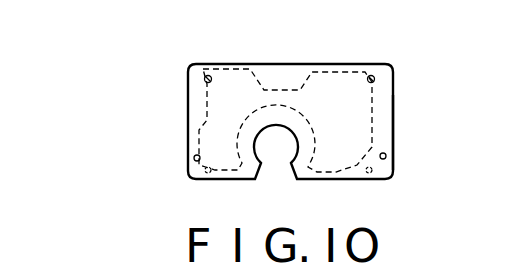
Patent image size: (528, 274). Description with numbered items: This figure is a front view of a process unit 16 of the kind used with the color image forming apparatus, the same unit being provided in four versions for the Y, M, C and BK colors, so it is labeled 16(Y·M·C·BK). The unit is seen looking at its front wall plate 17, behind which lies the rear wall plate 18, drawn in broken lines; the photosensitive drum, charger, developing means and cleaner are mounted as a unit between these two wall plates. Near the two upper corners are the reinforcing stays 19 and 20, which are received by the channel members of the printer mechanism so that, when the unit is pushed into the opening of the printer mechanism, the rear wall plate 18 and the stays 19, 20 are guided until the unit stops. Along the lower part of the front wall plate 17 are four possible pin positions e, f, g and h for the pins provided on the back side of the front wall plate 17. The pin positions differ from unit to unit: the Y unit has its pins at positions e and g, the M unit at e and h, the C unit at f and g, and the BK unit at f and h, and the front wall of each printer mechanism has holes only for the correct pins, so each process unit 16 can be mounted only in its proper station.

The process unit 16 is at (271, 63).
The front wall plate 17 is at (393, 132).
The rear wall plate 18 is at (380, 107).
The reinforcing stay 19 is at (204, 79).
The reinforcing stay 20 is at (374, 78).
The pin position e is at (193, 159).
The pin position f is at (204, 170).
The pin position g is at (387, 156).
The pin position h is at (373, 170).